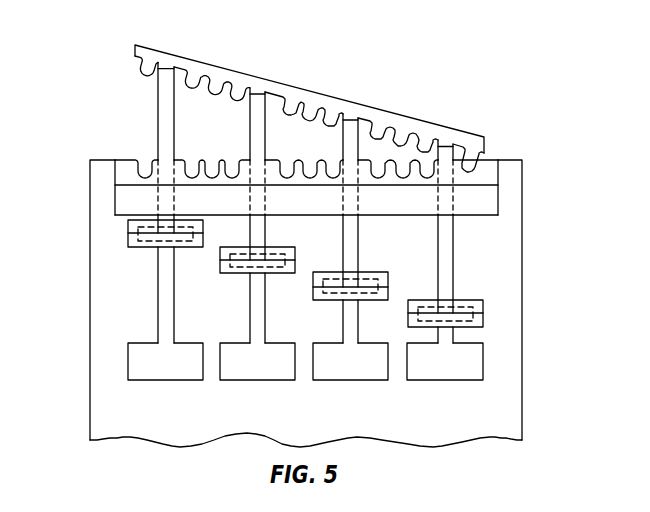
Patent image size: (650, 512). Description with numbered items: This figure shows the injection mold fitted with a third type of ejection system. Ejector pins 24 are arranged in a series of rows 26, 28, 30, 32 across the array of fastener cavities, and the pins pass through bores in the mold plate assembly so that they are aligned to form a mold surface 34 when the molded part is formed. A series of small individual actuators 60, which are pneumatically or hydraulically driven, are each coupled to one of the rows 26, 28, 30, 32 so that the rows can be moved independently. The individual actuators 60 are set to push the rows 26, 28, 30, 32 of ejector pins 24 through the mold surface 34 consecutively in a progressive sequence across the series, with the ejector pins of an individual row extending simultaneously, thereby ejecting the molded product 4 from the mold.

The molded product 4 is at (468, 137).
The ejector pins 24 is at (445, 260).
The first row of ejector pins 26 is at (150, 221).
The second row of ejector pins 28 is at (244, 132).
The third row of ejector pins 30 is at (337, 235).
The fourth row of ejector pins 32 is at (432, 251).
The mold surface 34 is at (98, 161).
The individual actuators 60 is at (146, 342).